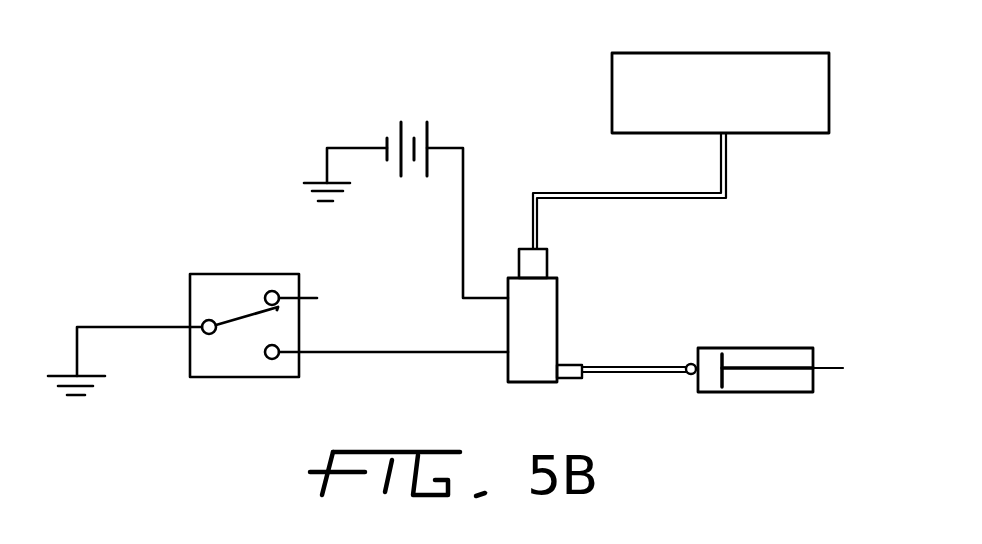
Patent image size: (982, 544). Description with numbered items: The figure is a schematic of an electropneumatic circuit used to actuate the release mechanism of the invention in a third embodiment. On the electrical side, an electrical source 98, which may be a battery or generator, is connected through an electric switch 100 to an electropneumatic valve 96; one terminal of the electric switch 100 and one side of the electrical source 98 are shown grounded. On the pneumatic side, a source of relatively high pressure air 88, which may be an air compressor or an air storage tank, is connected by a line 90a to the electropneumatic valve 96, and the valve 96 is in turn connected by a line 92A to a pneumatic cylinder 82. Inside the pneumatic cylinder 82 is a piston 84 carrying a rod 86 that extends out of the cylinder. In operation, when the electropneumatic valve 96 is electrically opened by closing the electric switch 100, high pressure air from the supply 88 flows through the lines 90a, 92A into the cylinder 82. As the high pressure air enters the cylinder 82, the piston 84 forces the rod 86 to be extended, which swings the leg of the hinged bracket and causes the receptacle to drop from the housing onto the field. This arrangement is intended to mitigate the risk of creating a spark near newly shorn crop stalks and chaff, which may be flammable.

The electric switch 100 is at (232, 280).
The electrical source 98 is at (436, 115).
The source of relatively high pressure air 88 is at (818, 93).
The line 90a is at (727, 177).
The electropneumatic valve 96 is at (558, 303).
The line 92A is at (633, 375).
The pneumatic cylinder 82 is at (758, 342).
The piston 84 is at (725, 374).
The rod 86 is at (790, 369).